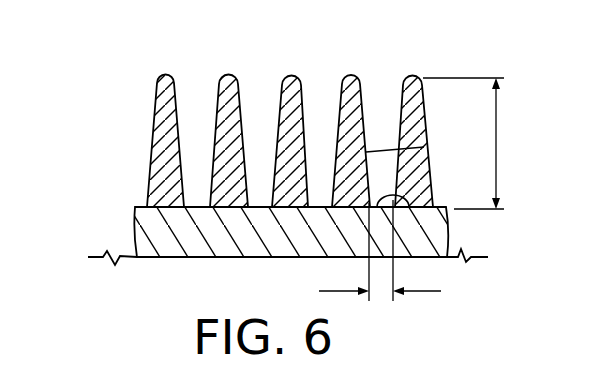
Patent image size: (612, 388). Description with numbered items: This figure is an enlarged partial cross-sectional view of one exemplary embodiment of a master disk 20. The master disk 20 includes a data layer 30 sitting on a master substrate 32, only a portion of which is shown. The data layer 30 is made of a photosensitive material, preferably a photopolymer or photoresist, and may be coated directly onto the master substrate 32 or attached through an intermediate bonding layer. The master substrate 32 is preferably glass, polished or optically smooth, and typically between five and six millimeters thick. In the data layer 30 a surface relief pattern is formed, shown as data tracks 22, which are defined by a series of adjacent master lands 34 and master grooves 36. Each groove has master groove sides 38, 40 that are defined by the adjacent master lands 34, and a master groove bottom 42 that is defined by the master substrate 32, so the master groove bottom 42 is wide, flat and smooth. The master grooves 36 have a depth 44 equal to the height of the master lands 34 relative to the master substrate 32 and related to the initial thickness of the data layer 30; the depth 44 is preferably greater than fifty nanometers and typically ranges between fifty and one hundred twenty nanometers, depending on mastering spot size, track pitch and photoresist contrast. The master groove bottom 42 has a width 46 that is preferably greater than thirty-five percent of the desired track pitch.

The master disk 20 is at (107, 69).
The data tracks 22 is at (319, 38).
The data layer 30 is at (130, 146).
The master substrate 32 is at (118, 227).
The master lands 34 is at (354, 84).
The master grooves 36 is at (251, 74).
The master groove side 38 is at (404, 108).
The master groove side 40 is at (424, 147).
The master groove bottom 42 is at (425, 213).
The depth 44 is at (497, 143).
The width 46 is at (428, 291).